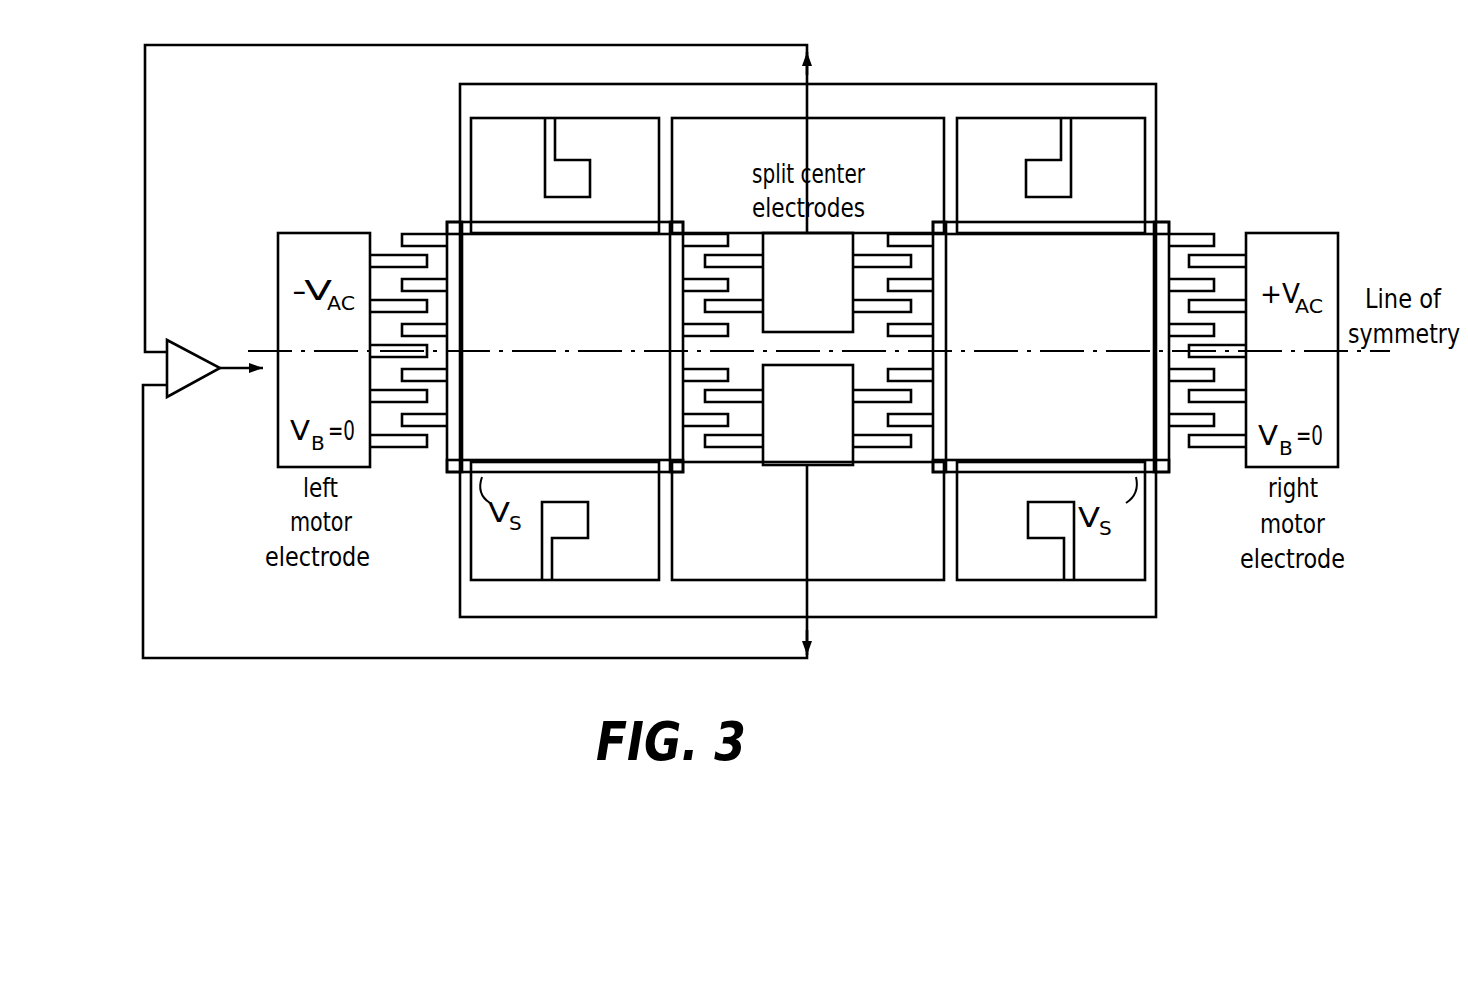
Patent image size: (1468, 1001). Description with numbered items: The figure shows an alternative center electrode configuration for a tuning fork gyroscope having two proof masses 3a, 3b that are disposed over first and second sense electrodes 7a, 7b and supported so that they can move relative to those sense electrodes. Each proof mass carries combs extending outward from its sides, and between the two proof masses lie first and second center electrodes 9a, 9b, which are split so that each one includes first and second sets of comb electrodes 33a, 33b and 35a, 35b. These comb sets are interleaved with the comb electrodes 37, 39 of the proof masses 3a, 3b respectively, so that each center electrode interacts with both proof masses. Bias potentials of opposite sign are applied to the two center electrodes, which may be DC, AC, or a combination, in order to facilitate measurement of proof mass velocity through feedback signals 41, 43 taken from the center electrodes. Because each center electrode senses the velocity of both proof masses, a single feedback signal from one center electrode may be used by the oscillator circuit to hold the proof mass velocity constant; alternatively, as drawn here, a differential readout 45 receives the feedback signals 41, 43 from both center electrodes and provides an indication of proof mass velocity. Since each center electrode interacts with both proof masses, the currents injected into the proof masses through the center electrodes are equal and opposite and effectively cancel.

The proof mass 3a is at (565, 398).
The proof mass 3b is at (1051, 303).
The first sense electrode 7a is at (478, 222).
The second sense electrode 7b is at (1115, 222).
The first center electrode 9a is at (818, 471).
The second center electrode 9b is at (846, 233).
The comb electrodes 33a is at (748, 450).
The comb electrodes 33b is at (868, 450).
The comb electrodes 35a is at (743, 253).
The comb electrodes 35b is at (868, 253).
The comb electrodes 37 is at (693, 467).
The comb electrodes 39 is at (918, 232).
The feedback signal 41 is at (475, 523).
The feedback signal 43 is at (495, 198).
The differential readout 45 is at (215, 374).